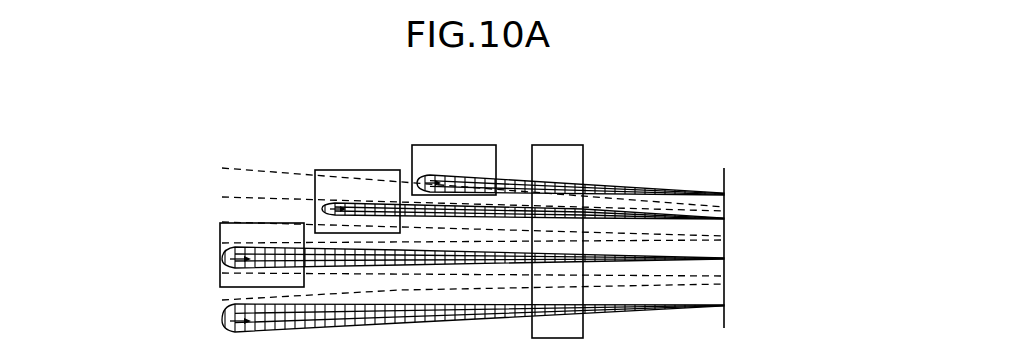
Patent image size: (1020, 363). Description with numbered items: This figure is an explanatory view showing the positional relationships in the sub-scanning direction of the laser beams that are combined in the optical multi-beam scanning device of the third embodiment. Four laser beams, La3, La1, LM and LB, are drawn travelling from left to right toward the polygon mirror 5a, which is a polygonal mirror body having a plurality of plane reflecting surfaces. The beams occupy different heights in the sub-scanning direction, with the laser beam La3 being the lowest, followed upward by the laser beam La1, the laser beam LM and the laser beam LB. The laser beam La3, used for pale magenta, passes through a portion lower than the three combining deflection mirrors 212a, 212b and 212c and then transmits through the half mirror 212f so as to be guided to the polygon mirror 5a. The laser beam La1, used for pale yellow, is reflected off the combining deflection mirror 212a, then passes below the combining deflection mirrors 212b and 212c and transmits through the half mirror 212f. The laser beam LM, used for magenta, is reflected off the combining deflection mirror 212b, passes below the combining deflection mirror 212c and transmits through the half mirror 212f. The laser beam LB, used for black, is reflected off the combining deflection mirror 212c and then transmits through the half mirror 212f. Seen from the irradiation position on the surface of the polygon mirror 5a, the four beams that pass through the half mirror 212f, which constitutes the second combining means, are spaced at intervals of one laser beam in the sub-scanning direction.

The combining deflection mirror 212a is at (220, 235).
The combining deflection mirror 212b is at (365, 170).
The combining deflection mirror 212c is at (433, 145).
The half mirror 212f is at (555, 145).
The laser beam LM is at (350, 205).
The laser beam LB is at (513, 162).
The laser beam La1 is at (226, 262).
The laser beam La3 is at (222, 323).
The polygon mirror 5a is at (724, 200).